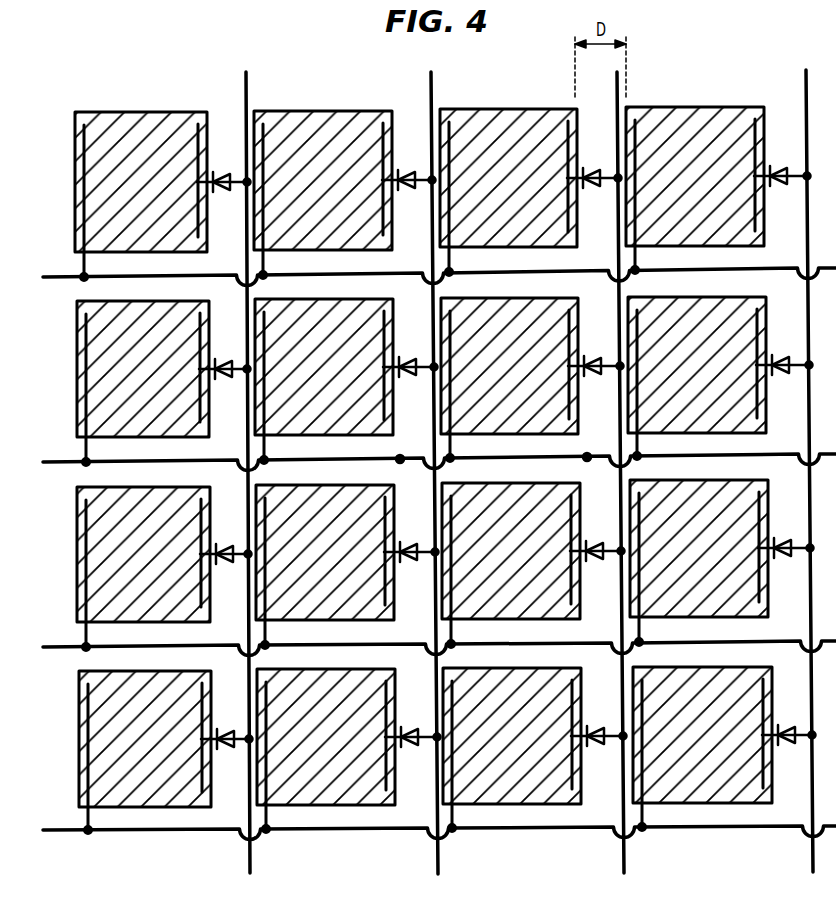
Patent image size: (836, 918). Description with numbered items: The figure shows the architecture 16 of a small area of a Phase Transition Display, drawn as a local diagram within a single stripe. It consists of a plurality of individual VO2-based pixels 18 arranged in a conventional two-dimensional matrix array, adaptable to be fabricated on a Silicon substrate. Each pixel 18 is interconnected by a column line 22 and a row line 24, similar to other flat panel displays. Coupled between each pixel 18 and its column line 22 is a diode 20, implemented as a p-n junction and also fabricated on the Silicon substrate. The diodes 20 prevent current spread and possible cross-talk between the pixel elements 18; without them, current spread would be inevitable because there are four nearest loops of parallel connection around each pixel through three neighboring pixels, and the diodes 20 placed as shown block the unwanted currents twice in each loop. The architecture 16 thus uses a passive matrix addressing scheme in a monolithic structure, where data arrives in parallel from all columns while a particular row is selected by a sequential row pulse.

The architecture 16 is at (48, 142).
The pixel 18 is at (162, 112).
The diode 20 is at (215, 172).
The column line 22 is at (248, 97).
The row line 24 is at (57, 281).